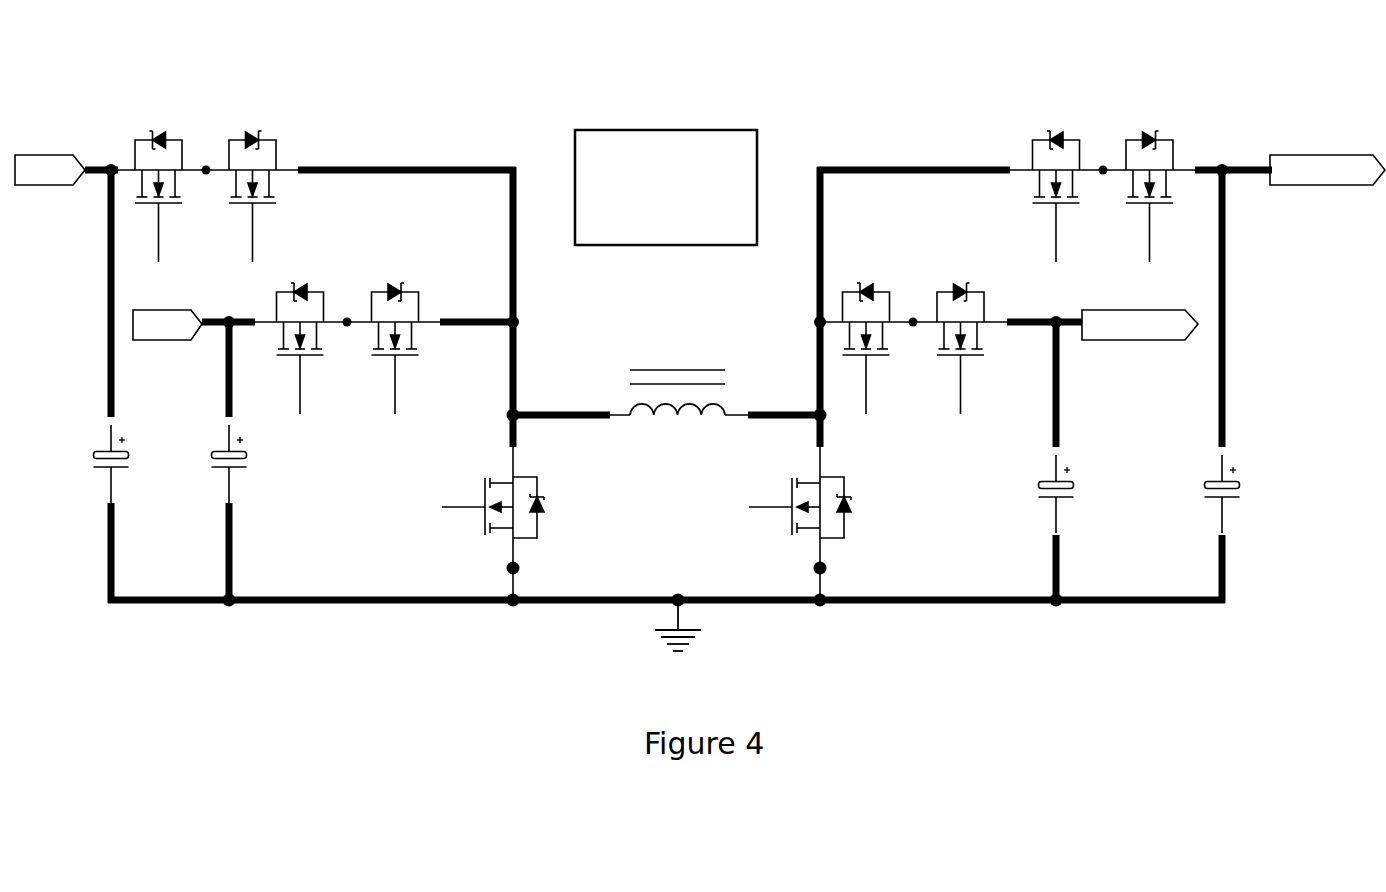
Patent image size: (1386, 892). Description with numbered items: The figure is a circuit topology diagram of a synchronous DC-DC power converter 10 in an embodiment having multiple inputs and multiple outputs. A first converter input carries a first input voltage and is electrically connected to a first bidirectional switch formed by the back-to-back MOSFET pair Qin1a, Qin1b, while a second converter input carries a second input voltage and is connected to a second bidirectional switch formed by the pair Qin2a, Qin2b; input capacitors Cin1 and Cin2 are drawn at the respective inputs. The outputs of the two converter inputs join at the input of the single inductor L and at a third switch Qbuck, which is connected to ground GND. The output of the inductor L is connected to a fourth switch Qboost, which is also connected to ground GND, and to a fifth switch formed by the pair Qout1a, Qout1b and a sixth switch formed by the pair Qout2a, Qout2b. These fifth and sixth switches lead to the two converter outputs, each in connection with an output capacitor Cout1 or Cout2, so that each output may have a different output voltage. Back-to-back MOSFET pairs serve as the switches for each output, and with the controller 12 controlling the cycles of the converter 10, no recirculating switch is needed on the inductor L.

The converter 10 is at (138, 99).
The controller 12 is at (622, 215).
The first bidirectional switch Qin1a is at (159, 212).
The first bidirectional switch Qin1b is at (254, 212).
The second bidirectional switch Qin2a is at (300, 365).
The second bidirectional switch Qin2b is at (395, 365).
The fifth switch Qout1a is at (1062, 212).
The fifth switch Qout1b is at (1156, 212).
The sixth switch Qout2a is at (874, 365).
The sixth switch Qout2b is at (969, 365).
The third switch Qbuck is at (492, 503).
The fourth switch Qboost is at (799, 503).
The input capacitor Cin1 is at (90, 464).
The input capacitor Cin2 is at (208, 464).
The output capacitor Cout1 is at (1194, 492).
The output capacitor Cout2 is at (1029, 492).
The inductor L is at (675, 378).
The ground GND is at (678, 643).